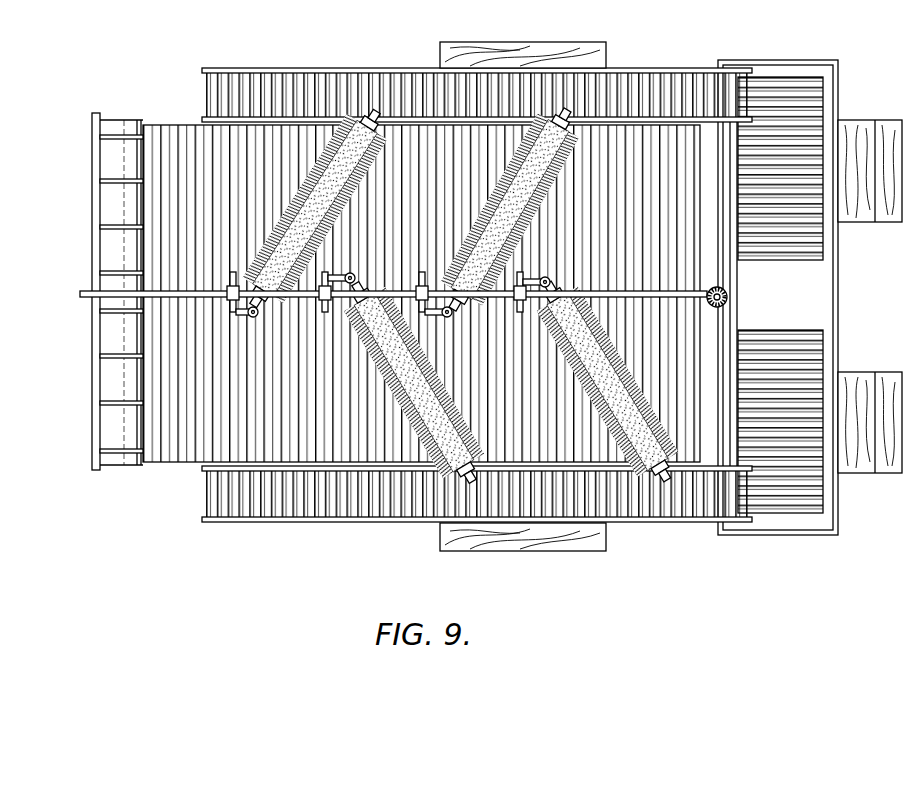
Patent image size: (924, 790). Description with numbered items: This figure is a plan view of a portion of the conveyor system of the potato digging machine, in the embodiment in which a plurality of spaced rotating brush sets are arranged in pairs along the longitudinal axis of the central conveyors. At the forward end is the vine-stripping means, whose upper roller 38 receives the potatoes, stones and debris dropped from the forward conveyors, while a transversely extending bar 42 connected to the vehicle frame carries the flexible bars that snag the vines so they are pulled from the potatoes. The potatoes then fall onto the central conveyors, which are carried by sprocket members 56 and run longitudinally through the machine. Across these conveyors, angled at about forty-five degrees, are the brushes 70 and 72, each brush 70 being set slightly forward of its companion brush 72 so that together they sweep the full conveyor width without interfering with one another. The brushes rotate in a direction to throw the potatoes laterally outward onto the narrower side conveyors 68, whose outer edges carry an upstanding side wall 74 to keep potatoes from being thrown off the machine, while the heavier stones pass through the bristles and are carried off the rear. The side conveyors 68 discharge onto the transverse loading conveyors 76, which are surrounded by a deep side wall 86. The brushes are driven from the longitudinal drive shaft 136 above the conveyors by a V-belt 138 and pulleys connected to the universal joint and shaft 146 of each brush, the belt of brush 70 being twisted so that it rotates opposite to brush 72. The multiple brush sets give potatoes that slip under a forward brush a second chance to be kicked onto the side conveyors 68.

The upper roller 38 is at (108, 157).
The transversely extending bar 42 is at (93, 200).
The sprocket members 56 is at (185, 140).
The side conveyors 68 is at (356, 85).
The brush 70 is at (337, 200).
The brush 72 is at (404, 404).
The upstanding side wall 74 is at (300, 70).
The loading conveyors 76 is at (785, 87).
The upstanding side wall 86 is at (838, 92).
The drive shaft 136 is at (84, 292).
The V-belt 138 is at (688, 296).
The universal joint and shaft 146 is at (550, 283).